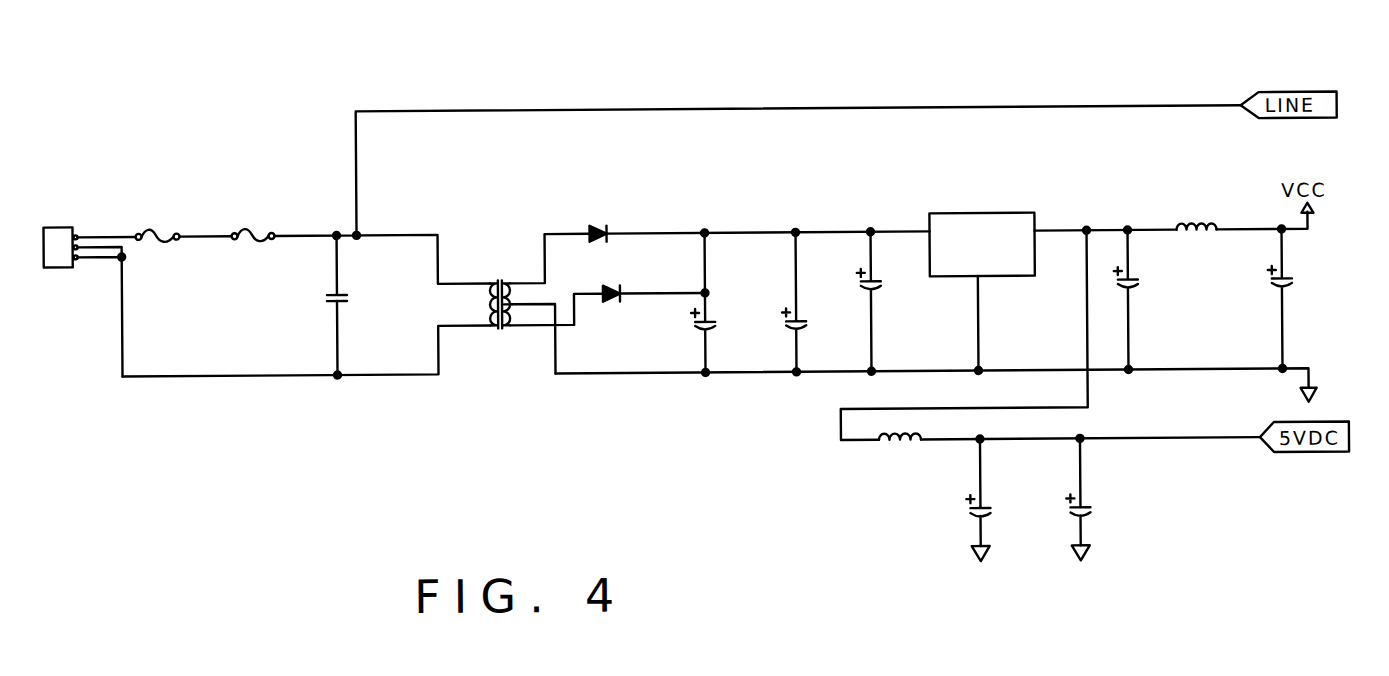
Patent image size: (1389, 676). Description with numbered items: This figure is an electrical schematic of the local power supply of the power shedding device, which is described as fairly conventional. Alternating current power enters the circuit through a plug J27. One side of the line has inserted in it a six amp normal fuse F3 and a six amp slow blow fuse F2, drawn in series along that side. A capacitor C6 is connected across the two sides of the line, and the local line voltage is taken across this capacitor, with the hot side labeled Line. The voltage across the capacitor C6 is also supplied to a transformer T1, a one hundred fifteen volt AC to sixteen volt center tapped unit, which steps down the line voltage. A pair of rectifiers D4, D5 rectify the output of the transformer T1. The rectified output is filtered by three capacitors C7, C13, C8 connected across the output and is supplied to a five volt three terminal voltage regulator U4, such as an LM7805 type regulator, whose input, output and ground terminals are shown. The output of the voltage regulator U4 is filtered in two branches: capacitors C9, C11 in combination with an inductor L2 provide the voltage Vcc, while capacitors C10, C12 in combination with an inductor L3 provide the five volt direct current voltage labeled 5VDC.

The plug J27 is at (62, 222).
The normal fuse F3 is at (155, 225).
The slow blow fuse F2 is at (253, 229).
The capacitor C6 is at (327, 292).
The transformer T1 is at (501, 250).
The rectifier D4 is at (607, 234).
The rectifier D5 is at (620, 292).
The capacitor C7 is at (715, 321).
The capacitor C13 is at (800, 319).
The capacitor C8 is at (875, 283).
The voltage regulator U4 is at (975, 216).
The inductor L2 is at (1201, 226).
The capacitor C9 is at (1135, 286).
The capacitor C11 is at (1290, 286).
The inductor L3 is at (897, 442).
The capacitor C10 is at (986, 509).
The capacitor C12 is at (1087, 508).